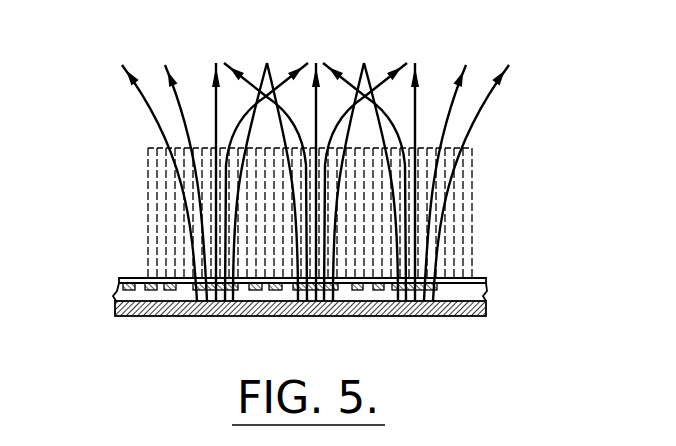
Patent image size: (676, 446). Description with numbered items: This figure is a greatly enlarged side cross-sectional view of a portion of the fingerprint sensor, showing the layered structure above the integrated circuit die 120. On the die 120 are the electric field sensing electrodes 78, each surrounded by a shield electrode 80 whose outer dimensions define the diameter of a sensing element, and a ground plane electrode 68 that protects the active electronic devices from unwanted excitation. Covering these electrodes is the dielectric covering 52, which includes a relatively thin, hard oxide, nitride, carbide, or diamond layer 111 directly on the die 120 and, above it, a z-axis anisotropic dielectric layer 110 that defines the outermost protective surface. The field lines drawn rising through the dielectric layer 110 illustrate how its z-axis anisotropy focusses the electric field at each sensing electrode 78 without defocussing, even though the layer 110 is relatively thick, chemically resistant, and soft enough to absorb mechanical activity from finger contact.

The dielectric covering 52 is at (133, 186).
The ground plane electrode 68 is at (477, 318).
The sensing electrode 78 is at (242, 291).
The shield electrode 80 is at (172, 291).
The z-axis anisotropic dielectric layer 110 is at (471, 185).
The thin layer 111 is at (477, 278).
The integrated circuit die 120 is at (116, 289).